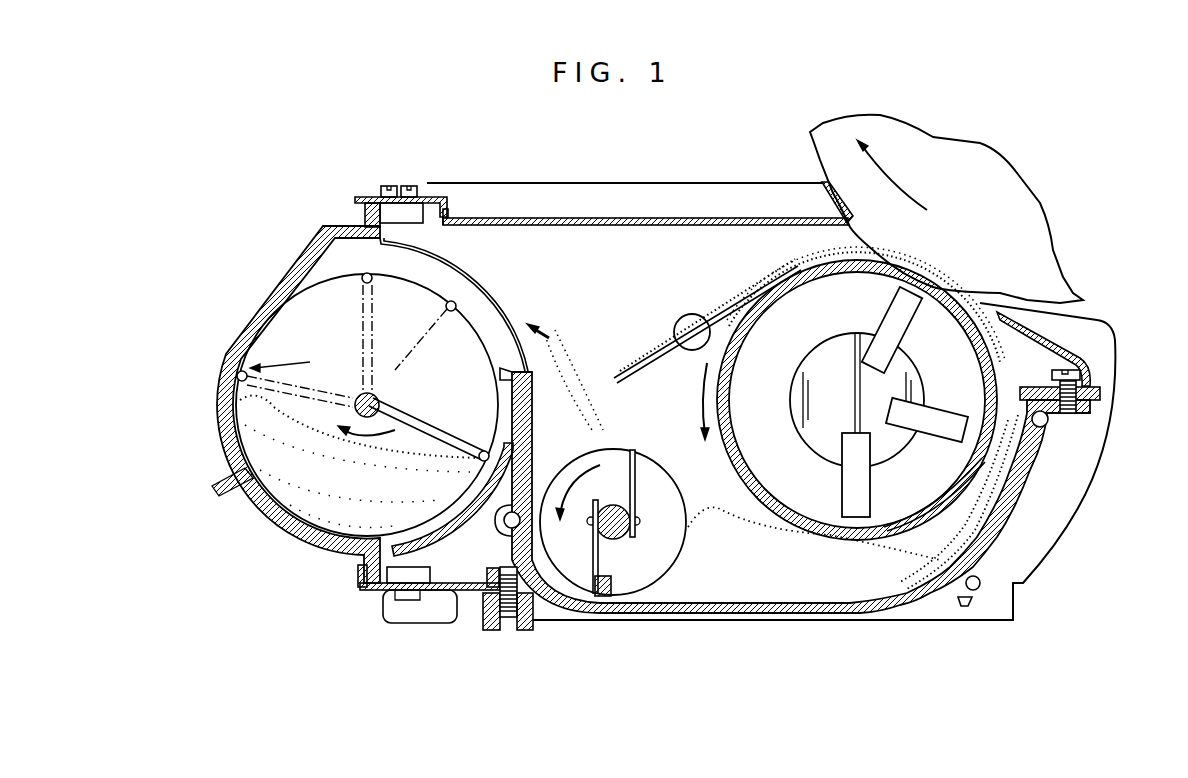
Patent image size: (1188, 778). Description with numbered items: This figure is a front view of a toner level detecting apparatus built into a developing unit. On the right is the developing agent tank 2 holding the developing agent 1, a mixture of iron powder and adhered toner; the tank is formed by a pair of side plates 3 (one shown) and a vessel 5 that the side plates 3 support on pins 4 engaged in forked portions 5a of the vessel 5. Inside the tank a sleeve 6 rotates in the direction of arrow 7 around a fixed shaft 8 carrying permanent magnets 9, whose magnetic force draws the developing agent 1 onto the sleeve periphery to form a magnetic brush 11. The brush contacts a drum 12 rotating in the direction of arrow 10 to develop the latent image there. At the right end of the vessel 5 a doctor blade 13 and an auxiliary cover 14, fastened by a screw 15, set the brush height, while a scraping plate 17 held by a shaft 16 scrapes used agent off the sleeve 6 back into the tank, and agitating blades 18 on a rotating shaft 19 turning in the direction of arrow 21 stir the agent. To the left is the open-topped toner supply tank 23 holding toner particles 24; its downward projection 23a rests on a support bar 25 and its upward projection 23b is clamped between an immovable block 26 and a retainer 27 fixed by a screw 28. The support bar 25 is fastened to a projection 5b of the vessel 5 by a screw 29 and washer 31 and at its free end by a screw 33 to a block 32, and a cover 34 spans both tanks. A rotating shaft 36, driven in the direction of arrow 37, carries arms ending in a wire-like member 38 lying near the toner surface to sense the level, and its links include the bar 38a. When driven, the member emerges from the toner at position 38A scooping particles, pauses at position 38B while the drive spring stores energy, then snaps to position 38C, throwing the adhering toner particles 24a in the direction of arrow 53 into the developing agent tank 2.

The developing agent 1 is at (717, 517).
The developing agent tank 2 is at (699, 177).
The side plates 3 is at (1108, 435).
The pins 4 is at (980, 588).
The vessel 5 is at (988, 552).
The forked portions 5a is at (963, 605).
The projection 5b is at (487, 578).
The sleeve 6 is at (920, 523).
The arrow 7 is at (702, 400).
The fixed rod or shaft 8 is at (790, 400).
The permanent magnets 9 is at (900, 330).
The arrow 10 is at (905, 197).
The magnetic brush 11 is at (940, 290).
The drum 12 is at (820, 148).
The doctor blade 13 is at (1102, 393).
The auxiliary cover 14 is at (1090, 370).
The screw 15 is at (1062, 414).
The shaft 16 is at (683, 316).
The scraping plate 17 is at (637, 369).
The agitating blades 18 is at (605, 592).
The rotating shaft 19 is at (627, 532).
The arrow 21 is at (590, 496).
The toner supply tank 23 is at (310, 252).
The projection 23a is at (360, 553).
The projection 23b is at (362, 212).
The toner particles 24 is at (232, 398).
The toner particles 24a is at (302, 358).
The support bar 25 is at (458, 615).
The immovable block 26 is at (388, 186).
The retainer 27 is at (365, 197).
The screw 28 is at (398, 206).
The screw 29 is at (510, 622).
The washer 31 is at (538, 620).
The block 32 is at (378, 585).
The screw 33 is at (395, 620).
The cover 34 is at (613, 217).
The rotating shaft 36 is at (410, 352).
The arrow 37 is at (350, 428).
The wire-like member 38 is at (481, 451).
The position of wire-like member 38A is at (238, 372).
The position of wire-like member 38B is at (358, 280).
The position of wire-like member 38C is at (456, 296).
The stirrer bar 38a is at (428, 432).
The arrow 53 is at (523, 300).